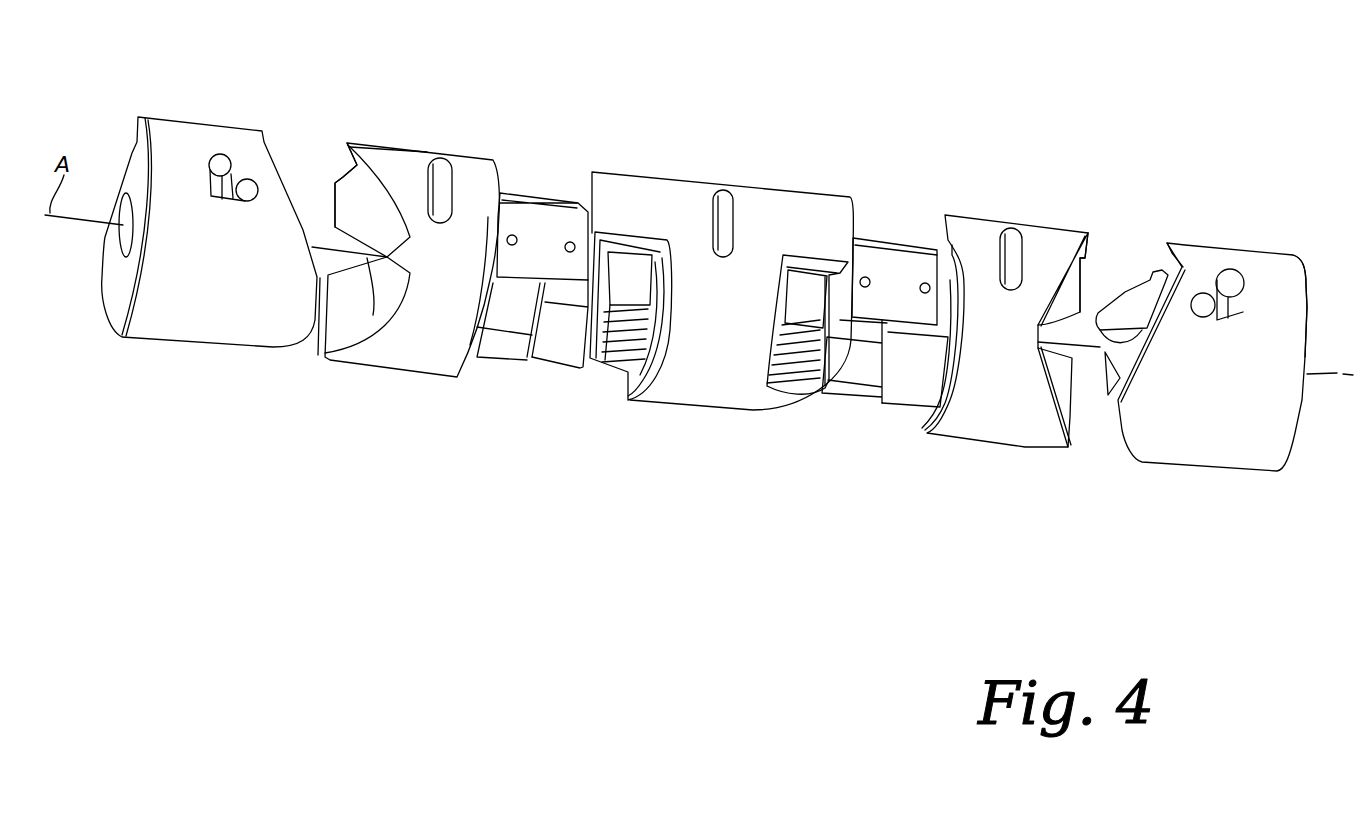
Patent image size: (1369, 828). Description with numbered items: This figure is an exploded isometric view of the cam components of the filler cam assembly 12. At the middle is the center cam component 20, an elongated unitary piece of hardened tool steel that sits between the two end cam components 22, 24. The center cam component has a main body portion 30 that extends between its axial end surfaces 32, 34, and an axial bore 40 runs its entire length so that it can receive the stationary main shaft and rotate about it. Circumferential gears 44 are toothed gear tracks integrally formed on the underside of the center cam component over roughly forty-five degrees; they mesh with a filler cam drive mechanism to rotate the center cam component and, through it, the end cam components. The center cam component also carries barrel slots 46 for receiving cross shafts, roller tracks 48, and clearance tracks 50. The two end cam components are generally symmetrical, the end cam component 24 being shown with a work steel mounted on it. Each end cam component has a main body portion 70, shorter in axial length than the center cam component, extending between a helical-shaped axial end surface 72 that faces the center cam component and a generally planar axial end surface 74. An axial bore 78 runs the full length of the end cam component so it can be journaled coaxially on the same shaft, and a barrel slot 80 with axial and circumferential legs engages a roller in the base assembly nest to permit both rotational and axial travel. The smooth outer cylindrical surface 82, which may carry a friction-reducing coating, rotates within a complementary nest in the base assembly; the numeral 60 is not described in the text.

The filler cam assembly 12 is at (897, 95).
The center cam component 20 is at (683, 407).
The end cam component 22 is at (1185, 470).
The end cam component 24 is at (177, 343).
The main body portion 30 is at (802, 205).
The axial end surface 32 is at (1077, 425).
The axial end surface 34 is at (378, 295).
The axial bore 40 is at (387, 257).
The circumferential gears 44 is at (617, 347).
The barrel slots 46 is at (432, 158).
The roller tracks 48 is at (553, 333).
The clearance tracks 50 is at (505, 323).
The ring 60 is at (462, 283).
The main body portion 70 is at (1265, 433).
The axial end surface 72 is at (1105, 390).
The axial end surface 74 is at (1308, 305).
The axial bore 78 is at (1133, 305).
The barrel slot 80 is at (1230, 283).
The outer cylindrical surface 82 is at (1240, 370).